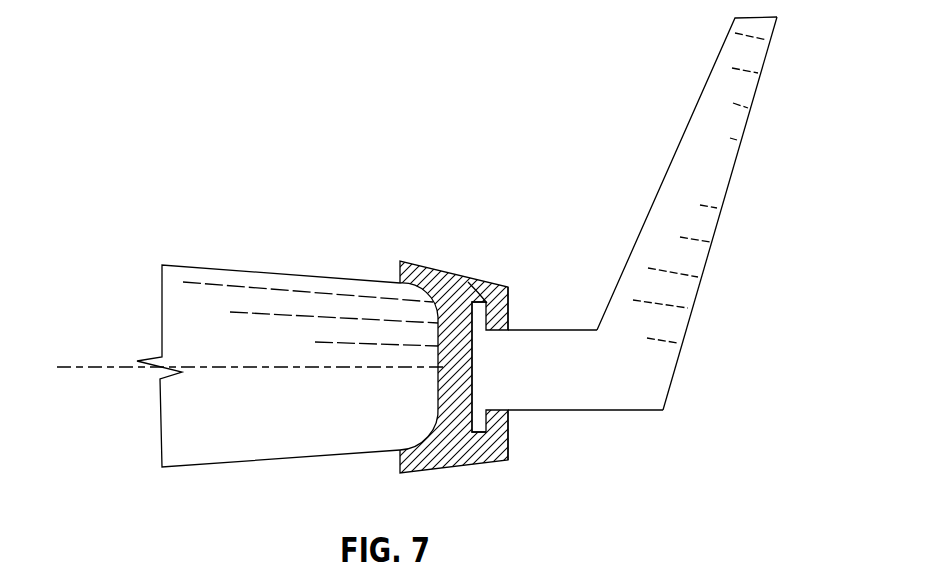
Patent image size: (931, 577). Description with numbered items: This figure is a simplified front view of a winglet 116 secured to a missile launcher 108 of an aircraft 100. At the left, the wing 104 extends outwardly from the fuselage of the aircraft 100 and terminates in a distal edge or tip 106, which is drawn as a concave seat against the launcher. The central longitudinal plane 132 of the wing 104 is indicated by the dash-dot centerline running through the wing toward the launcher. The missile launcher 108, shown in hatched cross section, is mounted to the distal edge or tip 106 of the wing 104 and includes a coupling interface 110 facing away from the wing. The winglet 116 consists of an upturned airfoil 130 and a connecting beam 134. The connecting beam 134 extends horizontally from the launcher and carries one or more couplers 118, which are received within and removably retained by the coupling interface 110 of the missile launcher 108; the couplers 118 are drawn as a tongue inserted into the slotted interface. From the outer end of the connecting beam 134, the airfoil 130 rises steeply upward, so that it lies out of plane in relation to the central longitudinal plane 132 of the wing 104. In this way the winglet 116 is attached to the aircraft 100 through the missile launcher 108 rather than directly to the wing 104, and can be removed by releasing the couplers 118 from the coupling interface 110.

The aircraft 100 is at (157, 184).
The wing 104 is at (257, 272).
The distal edge or tip 106 is at (437, 365).
The missile launcher 108 is at (468, 282).
The coupling interface 110 is at (510, 300).
The winglet 116 is at (708, 260).
The couplers 118 is at (473, 360).
The upturned airfoil 130 is at (715, 160).
The central longitudinal plane 132 is at (70, 365).
The connecting beam 134 is at (600, 357).